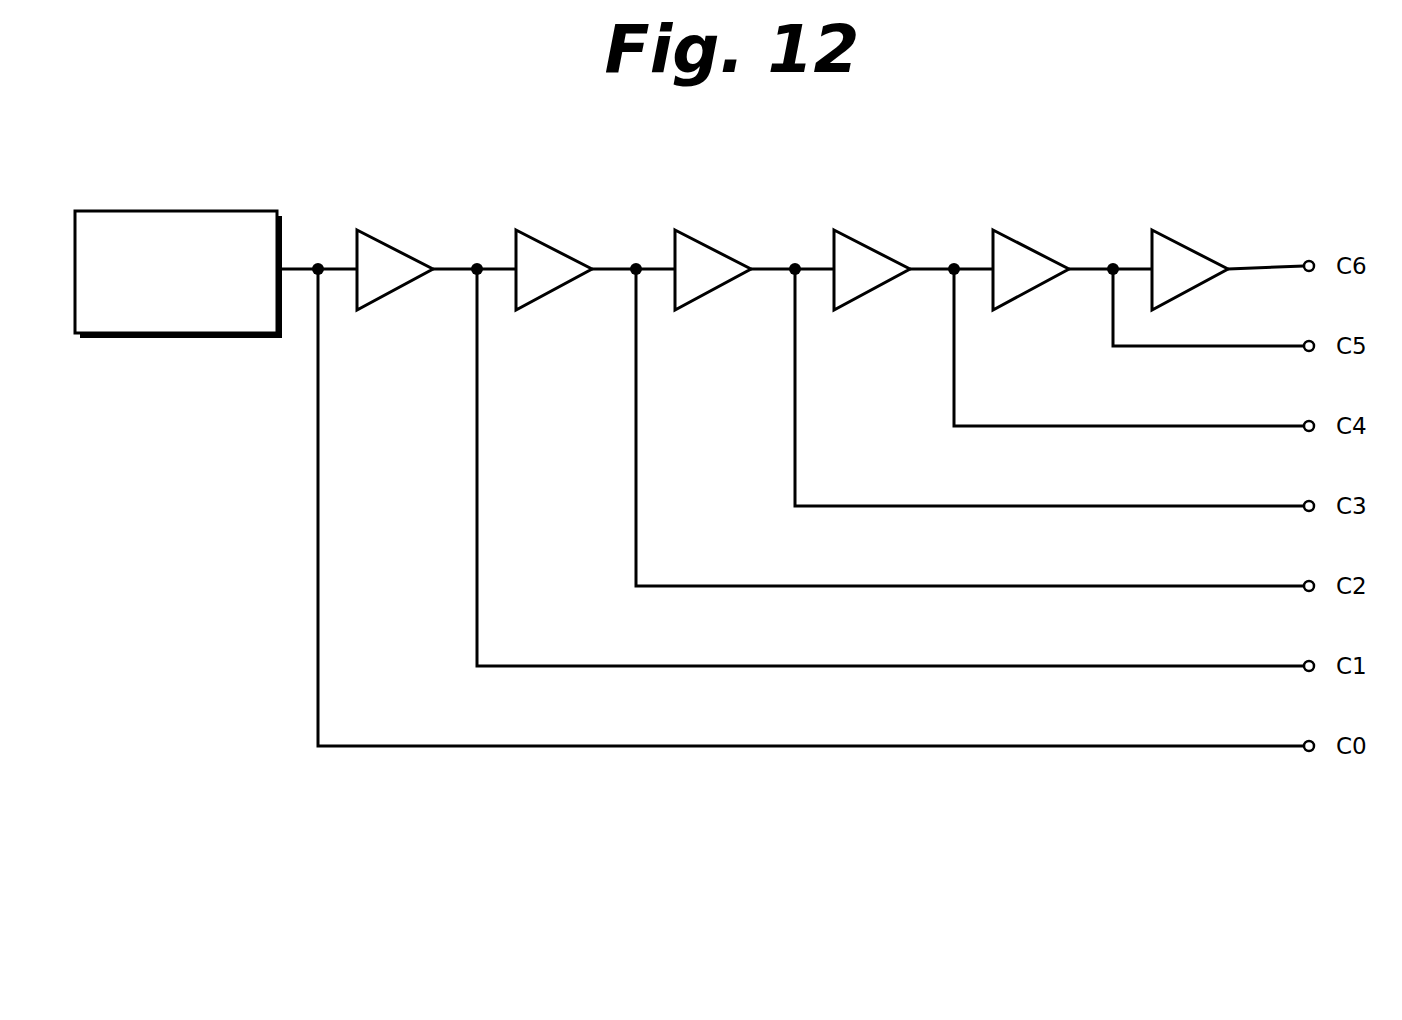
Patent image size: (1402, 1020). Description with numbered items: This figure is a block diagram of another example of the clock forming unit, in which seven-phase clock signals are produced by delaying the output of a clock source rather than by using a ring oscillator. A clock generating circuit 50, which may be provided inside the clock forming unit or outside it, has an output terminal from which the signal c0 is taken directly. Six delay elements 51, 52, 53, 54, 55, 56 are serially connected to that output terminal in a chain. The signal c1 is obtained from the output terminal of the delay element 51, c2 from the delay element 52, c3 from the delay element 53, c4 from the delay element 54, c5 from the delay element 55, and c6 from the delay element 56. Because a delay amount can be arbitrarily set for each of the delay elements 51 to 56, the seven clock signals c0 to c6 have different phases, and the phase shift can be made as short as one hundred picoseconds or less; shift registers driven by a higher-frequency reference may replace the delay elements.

The clock generating circuit 50 is at (173, 211).
The delay element 51 is at (396, 249).
The delay element 52 is at (555, 249).
The delay element 53 is at (714, 249).
The delay element 54 is at (873, 249).
The delay element 55 is at (1032, 249).
The delay element 56 is at (1191, 249).